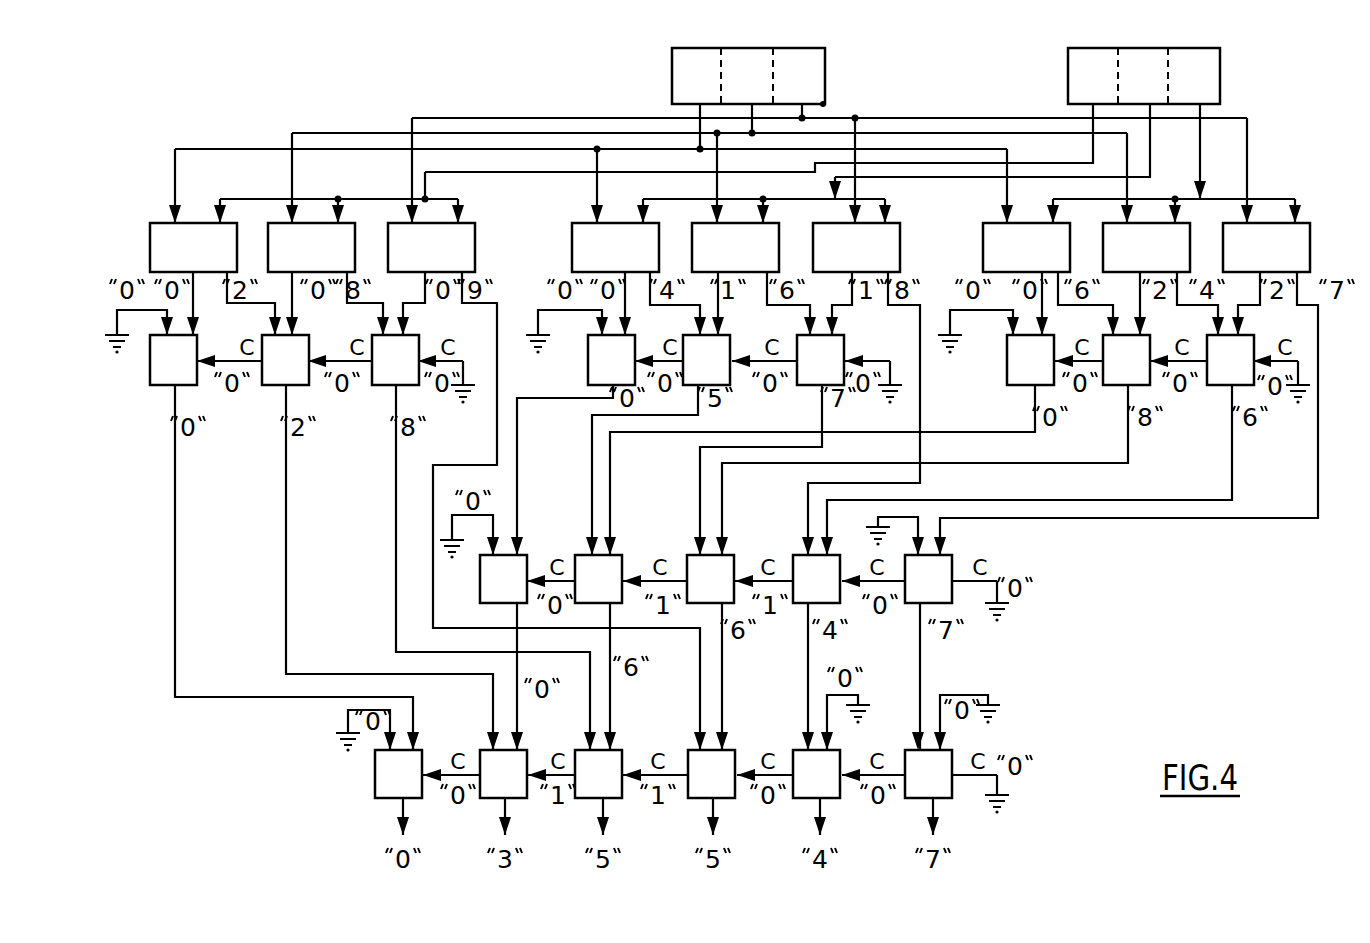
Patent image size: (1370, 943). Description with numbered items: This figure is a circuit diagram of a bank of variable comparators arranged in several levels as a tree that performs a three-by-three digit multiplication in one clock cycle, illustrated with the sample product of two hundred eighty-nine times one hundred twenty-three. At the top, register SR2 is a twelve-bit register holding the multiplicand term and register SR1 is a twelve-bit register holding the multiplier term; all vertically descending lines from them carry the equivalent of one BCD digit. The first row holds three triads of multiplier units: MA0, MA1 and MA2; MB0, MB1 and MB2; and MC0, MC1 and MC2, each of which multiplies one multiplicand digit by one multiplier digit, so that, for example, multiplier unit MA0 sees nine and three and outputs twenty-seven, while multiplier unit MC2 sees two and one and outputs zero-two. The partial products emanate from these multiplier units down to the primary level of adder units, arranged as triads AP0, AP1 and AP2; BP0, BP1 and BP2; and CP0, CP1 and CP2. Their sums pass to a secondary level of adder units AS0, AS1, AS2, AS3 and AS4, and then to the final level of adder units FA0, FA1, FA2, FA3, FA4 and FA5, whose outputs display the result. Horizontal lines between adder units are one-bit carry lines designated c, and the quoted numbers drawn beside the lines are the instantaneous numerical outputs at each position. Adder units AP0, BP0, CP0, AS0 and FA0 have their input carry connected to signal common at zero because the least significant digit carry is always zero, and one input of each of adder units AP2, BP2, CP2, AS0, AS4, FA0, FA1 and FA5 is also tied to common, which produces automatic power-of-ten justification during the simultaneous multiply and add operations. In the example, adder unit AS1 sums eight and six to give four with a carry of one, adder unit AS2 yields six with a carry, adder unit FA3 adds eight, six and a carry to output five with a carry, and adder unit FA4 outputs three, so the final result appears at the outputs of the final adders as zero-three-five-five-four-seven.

The register SR1 is at (1228, 88).
The register SR2 is at (842, 87).
The multiplier unit MC2 is at (193, 247).
The multiplier unit MC1 is at (311, 247).
The multiplier unit MC0 is at (431, 247).
The multiplier unit MB2 is at (615, 247).
The multiplier unit MB1 is at (735, 247).
The multiplier unit MB0 is at (856, 247).
The multiplier unit MA2 is at (1026, 247).
The multiplier unit MA1 is at (1146, 247).
The multiplier unit MA0 is at (1266, 247).
The adder unit CP2 is at (173, 360).
The adder unit CP1 is at (285, 360).
The adder unit CP0 is at (395, 360).
The adder unit BP2 is at (611, 360).
The adder unit BP1 is at (706, 360).
The adder unit BP0 is at (820, 360).
The adder unit AP2 is at (1030, 360).
The adder unit AP1 is at (1126, 360).
The adder unit AP0 is at (1230, 360).
The adder unit AS4 is at (503, 579).
The adder unit AS3 is at (598, 579).
The adder unit AS2 is at (710, 579).
The adder unit AS1 is at (816, 579).
The adder unit AS0 is at (928, 579).
The adder unit FA5 is at (398, 774).
The adder unit FA4 is at (503, 774).
The adder unit FA3 is at (598, 774).
The adder unit FA2 is at (711, 774).
The adder unit FA1 is at (816, 774).
The adder unit FA0 is at (928, 774).